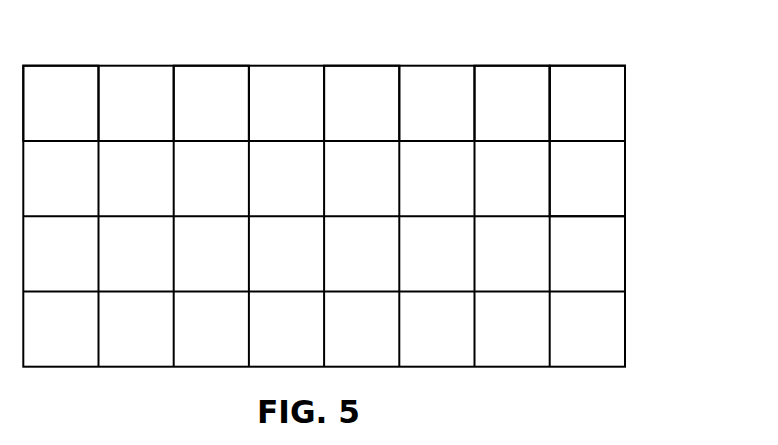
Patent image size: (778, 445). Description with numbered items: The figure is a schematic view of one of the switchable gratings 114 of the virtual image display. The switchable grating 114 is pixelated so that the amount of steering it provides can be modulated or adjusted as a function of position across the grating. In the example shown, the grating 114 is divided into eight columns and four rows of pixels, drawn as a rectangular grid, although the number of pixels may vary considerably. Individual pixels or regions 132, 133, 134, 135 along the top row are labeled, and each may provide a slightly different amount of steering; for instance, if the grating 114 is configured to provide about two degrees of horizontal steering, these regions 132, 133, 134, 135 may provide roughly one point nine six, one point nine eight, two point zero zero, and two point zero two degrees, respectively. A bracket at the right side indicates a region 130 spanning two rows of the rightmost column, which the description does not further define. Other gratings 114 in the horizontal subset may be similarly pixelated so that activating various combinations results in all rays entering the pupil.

The switchable grating 114 is at (585, 43).
The panel array 130 is at (625, 99).
The pixel or region 132 is at (60, 63).
The pixel or region 133 is at (201, 63).
The pixel or region 134 is at (352, 63).
The pixel or region 135 is at (523, 63).